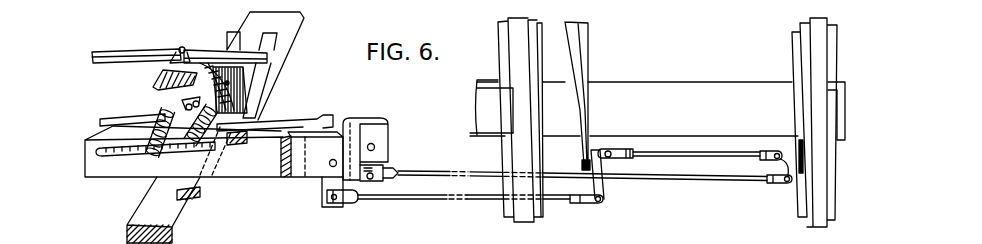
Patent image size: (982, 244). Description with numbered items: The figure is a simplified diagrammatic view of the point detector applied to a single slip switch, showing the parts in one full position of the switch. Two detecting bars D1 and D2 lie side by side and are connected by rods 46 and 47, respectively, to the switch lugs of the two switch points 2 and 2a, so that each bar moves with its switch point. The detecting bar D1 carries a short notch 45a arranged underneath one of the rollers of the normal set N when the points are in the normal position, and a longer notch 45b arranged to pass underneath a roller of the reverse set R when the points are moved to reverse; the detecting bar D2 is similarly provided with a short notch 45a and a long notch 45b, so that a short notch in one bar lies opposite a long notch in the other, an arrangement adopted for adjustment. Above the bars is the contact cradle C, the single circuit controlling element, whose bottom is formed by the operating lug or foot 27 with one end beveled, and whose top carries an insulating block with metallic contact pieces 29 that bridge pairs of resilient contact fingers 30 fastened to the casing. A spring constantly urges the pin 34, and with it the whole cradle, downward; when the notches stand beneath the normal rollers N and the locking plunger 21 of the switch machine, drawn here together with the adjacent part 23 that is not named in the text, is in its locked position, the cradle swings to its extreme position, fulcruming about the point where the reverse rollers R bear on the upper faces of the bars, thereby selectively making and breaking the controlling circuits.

The switch point 2 is at (575, 53).
The switch point 2a is at (805, 52).
The locking plunger 21 is at (297, 37).
The guide block 23 is at (268, 65).
The operating lug or foot 27 is at (180, 183).
The contact pieces 29 is at (182, 47).
The resilient contact fingers 30 is at (125, 56).
The pin 34 is at (191, 99).
The short notch 45a is at (235, 187).
The long notch 45b is at (303, 109).
The rod 46 is at (428, 172).
The rod 47 is at (433, 200).
The contact cradle C is at (157, 73).
The detecting bar D1 is at (352, 118).
The detecting bar D2 is at (305, 168).
The normal set of rollers N is at (166, 111).
The reverse set of rollers R is at (243, 100).